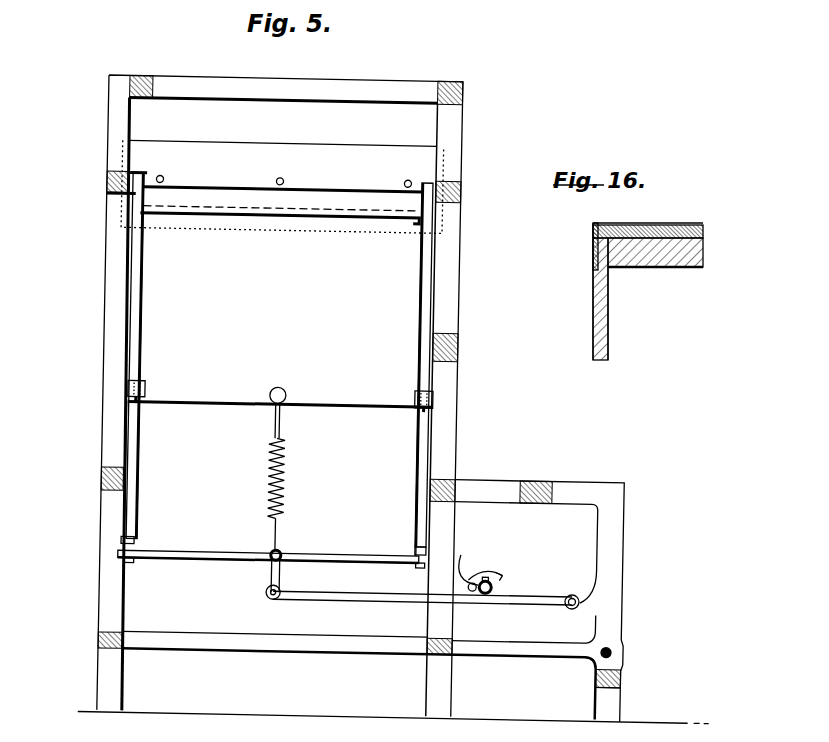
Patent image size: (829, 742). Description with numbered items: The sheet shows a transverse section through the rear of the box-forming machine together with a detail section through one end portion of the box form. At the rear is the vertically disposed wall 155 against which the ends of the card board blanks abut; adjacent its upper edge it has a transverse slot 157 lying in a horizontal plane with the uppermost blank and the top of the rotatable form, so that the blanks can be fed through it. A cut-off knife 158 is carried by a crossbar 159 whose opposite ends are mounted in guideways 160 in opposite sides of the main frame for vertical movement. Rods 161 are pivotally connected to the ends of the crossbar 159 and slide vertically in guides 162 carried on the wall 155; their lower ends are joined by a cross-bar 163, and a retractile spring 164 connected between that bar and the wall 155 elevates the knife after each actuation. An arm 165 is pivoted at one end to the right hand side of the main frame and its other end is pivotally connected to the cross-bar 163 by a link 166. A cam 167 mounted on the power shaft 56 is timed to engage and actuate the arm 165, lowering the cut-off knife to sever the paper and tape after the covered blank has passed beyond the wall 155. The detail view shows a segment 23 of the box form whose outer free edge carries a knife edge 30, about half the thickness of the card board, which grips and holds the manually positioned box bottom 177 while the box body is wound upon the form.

In FIG. 5, the wall 155 is at (140, 306).
In FIG. 5, the transverse slot 157 is at (240, 214).
In FIG. 5, the cut-off knife 158 is at (341, 200).
In FIG. 5, the crossbar 159 is at (270, 149).
In FIG. 5, the guideways 160 is at (124, 153).
In FIG. 5, the rods 161 is at (143, 366).
In FIG. 5, the guides 162 is at (134, 393).
In FIG. 5, the cross-bar 163 is at (133, 553).
In FIG. 5, the retractile spring 164 is at (293, 465).
In FIG. 5, the arm 165 is at (397, 590).
In FIG. 5, the link 166 is at (283, 572).
In FIG. 5, the cam 167 is at (480, 558).
In FIG. 5, the power shaft 56 is at (517, 570).
In FIG. 16, the knife edge 30 is at (613, 232).
In FIG. 16, the segments 23 is at (670, 263).
In FIG. 16, the box bottom 177 is at (597, 327).